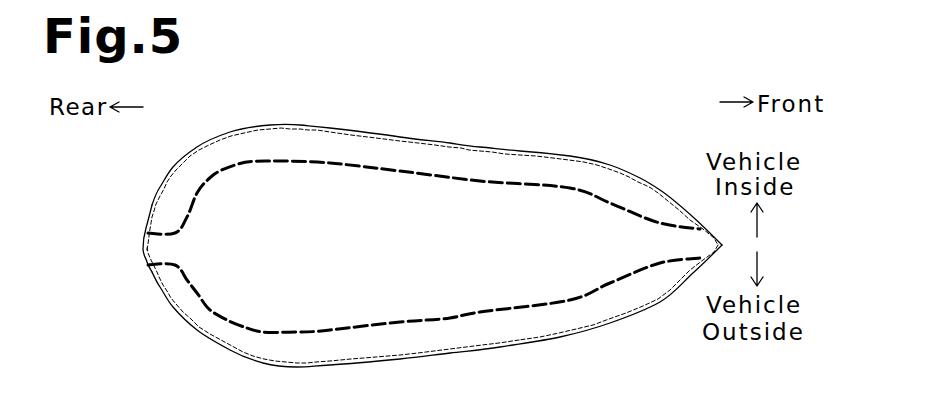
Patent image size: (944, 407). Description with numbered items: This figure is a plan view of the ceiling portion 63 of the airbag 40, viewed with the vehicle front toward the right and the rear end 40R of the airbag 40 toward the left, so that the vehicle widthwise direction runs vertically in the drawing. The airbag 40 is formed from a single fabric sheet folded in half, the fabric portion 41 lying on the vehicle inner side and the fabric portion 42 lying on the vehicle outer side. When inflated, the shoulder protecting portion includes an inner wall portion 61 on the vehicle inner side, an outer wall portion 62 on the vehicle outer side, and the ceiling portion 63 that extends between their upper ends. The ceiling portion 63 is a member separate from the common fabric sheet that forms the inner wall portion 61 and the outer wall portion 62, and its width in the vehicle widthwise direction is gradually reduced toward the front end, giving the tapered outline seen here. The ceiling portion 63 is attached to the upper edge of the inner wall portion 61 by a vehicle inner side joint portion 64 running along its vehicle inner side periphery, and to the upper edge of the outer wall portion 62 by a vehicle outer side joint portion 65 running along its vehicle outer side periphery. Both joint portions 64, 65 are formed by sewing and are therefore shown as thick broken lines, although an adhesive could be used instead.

The airbag 40 is at (665, 324).
The rear end of the airbag 40R is at (143, 249).
The fabric portion 41 is at (541, 153).
The fabric portion 42 is at (547, 337).
The inner wall portion 61 is at (432, 178).
The outer wall portion 62 is at (618, 317).
The ceiling portion 63 is at (495, 325).
The vehicle inner side joint portion 64 is at (240, 167).
The vehicle outer side joint portion 65 is at (220, 318).